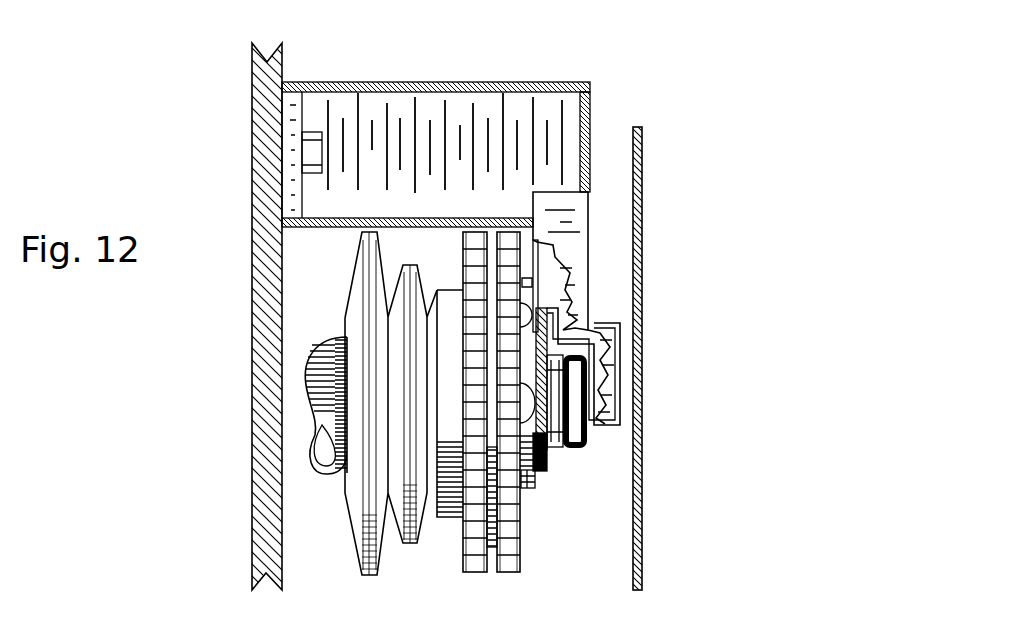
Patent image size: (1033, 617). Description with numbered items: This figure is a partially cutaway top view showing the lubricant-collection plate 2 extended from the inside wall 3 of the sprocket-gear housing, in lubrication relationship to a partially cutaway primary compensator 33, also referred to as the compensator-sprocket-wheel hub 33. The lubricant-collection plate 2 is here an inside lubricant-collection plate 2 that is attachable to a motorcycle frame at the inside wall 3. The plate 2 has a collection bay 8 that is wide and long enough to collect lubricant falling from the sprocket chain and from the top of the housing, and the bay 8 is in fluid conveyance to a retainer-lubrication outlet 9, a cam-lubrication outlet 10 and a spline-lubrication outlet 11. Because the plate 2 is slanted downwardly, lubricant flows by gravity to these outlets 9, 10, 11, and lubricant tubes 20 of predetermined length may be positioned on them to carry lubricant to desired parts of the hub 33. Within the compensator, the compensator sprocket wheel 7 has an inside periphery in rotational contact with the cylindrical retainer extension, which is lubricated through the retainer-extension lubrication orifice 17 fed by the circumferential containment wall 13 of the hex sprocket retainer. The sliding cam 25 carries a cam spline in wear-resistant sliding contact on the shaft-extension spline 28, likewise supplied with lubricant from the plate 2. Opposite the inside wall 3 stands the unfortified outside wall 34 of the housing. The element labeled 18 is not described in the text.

The lubricant-collection plate 2 is at (591, 83).
The inside wall 3 is at (265, 582).
The compensator sprocket wheel 7 is at (510, 565).
The collection bay 8 is at (548, 166).
The retainer-lubrication outlet 9 is at (590, 405).
The cam-lubrication outlet 10 is at (557, 327).
The spline-lubrication outlet 11 is at (538, 285).
The circumferential containment wall 13 is at (583, 440).
The retainer-extension lubrication orifice 17 is at (548, 458).
The spacer 18 is at (542, 492).
The lubricant tubes 20 is at (517, 270).
The sliding cam 25 is at (457, 495).
The shaft-extension spline 28 is at (337, 474).
The primary compensator 33 is at (567, 262).
The unfortified outside wall 34 is at (642, 138).